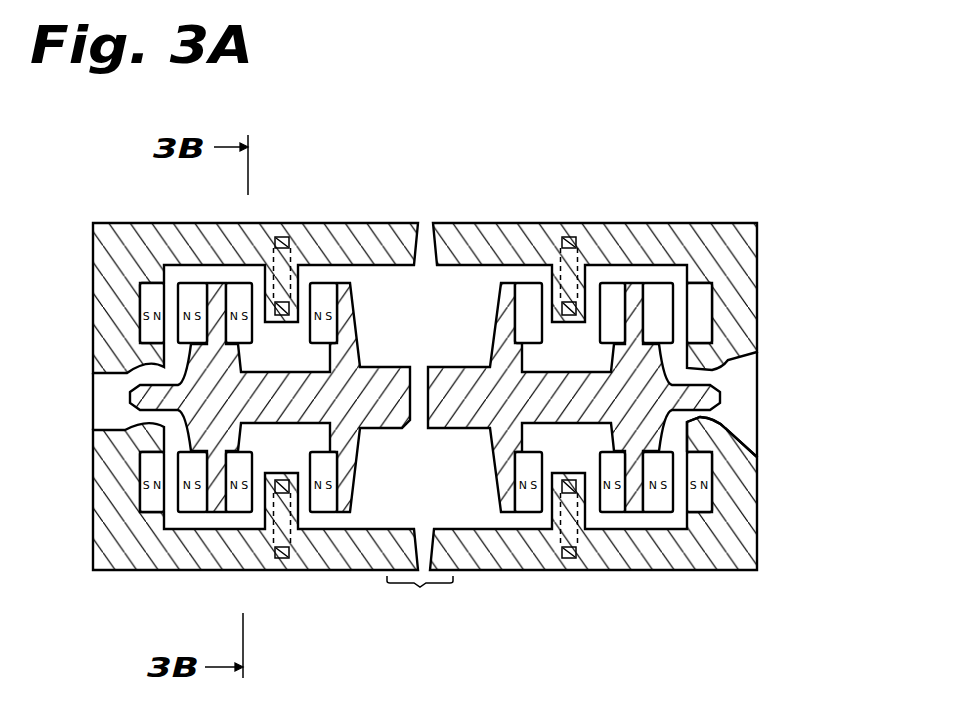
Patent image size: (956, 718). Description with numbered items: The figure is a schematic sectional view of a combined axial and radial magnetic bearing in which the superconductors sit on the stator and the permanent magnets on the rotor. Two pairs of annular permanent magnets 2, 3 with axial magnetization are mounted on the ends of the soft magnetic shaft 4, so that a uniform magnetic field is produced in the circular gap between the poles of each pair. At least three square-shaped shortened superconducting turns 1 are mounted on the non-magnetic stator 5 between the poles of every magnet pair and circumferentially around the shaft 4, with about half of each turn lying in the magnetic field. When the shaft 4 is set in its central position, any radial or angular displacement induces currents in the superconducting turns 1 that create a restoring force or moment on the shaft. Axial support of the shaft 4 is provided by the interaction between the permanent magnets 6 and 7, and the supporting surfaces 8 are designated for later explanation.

The superconducting turns 1 is at (571, 558).
The annular permanent magnet 2 is at (530, 292).
The annular permanent magnet 3 is at (613, 287).
The soft magnetic shaft 4 is at (460, 407).
The non-magnetic stator 5 is at (636, 540).
The permanent magnet 6 is at (658, 292).
The permanent magnet 7 is at (703, 290).
The supporting surfaces 8 is at (757, 457).